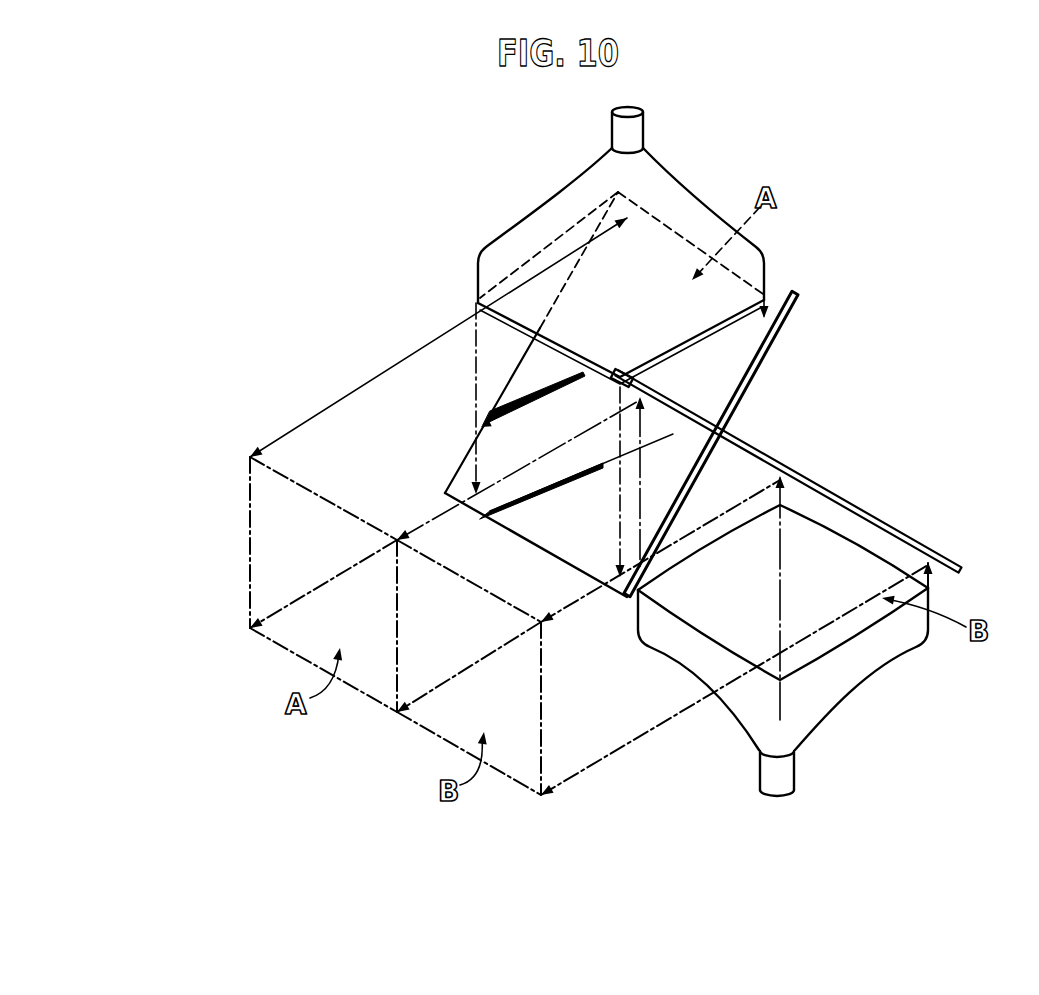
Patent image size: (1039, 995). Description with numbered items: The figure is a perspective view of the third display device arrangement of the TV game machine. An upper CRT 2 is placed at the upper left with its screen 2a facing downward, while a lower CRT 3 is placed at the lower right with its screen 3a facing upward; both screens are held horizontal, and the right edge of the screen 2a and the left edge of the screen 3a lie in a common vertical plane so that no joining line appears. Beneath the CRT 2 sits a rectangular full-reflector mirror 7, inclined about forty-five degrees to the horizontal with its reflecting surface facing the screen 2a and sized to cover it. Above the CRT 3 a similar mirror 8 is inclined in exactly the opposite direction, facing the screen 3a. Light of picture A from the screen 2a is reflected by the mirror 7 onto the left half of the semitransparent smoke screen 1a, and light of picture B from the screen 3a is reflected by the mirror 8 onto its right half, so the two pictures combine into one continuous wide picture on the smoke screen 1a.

The smoke screen 1a is at (273, 530).
The CRT 2 is at (648, 154).
The screen 2a is at (670, 333).
The CRT 3 is at (874, 678).
The screen 3a is at (839, 556).
The mirror 7 is at (790, 292).
The mirror 8 is at (749, 445).